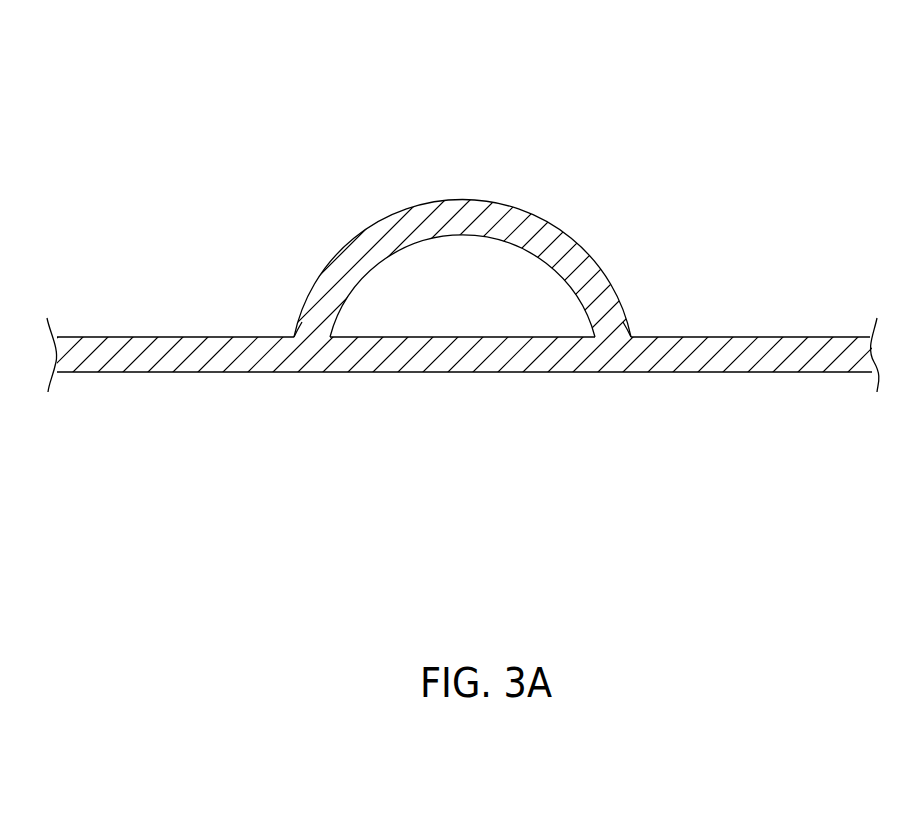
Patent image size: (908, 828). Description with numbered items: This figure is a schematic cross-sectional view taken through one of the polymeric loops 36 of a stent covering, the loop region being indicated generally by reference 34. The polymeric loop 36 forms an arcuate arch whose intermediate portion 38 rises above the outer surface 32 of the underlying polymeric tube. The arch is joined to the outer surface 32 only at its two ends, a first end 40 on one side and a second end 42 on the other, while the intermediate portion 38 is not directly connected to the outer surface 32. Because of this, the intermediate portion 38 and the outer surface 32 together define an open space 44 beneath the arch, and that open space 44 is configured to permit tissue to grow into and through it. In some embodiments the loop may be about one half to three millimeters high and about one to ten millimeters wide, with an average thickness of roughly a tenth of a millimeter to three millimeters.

The outer surface 32 is at (782, 337).
The dome structure 34 is at (454, 216).
The polymeric loop 36 is at (458, 285).
The intermediate portion 38 is at (418, 215).
The first end 40 is at (293, 337).
The second end 42 is at (633, 337).
The open space 44 is at (463, 308).